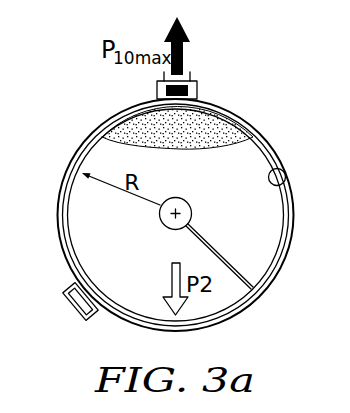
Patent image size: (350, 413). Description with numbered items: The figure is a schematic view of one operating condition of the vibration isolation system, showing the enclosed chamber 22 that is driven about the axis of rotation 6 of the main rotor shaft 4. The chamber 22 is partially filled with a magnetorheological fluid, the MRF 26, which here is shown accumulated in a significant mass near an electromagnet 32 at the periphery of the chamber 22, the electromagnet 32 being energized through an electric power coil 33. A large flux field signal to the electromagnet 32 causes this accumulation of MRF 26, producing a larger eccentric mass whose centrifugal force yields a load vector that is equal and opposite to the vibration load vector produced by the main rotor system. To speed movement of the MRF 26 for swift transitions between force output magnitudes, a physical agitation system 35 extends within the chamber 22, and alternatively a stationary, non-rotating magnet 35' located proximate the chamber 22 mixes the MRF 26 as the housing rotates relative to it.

The main rotor shaft 4 is at (191, 206).
The axis of rotation 6 is at (168, 227).
The enclosed chamber 22 is at (272, 277).
The MRF 26 is at (226, 128).
The electromagnet 32 is at (199, 90).
The electric power coil 33 is at (190, 72).
The physical agitation system 35 is at (222, 247).
The stationary magnet 35' is at (55, 315).